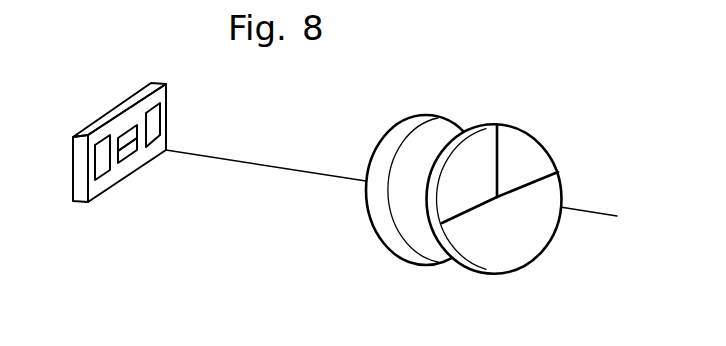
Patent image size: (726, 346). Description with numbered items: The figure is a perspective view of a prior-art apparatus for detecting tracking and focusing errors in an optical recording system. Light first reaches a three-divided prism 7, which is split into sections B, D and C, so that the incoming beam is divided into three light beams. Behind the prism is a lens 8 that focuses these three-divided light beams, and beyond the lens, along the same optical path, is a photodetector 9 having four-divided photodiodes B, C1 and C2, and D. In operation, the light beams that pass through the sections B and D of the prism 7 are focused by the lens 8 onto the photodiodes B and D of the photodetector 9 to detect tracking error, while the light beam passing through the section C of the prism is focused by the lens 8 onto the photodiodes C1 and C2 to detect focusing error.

The three-divided prism 7 is at (538, 235).
The lens 8 is at (433, 127).
The photodetector 9 is at (102, 191).
The section B / photodiode B is at (99, 162).
The section C is at (485, 254).
The photodiode C1 is at (127, 133).
The photodiode C2 is at (130, 156).
The section D / photodiode D is at (158, 117).